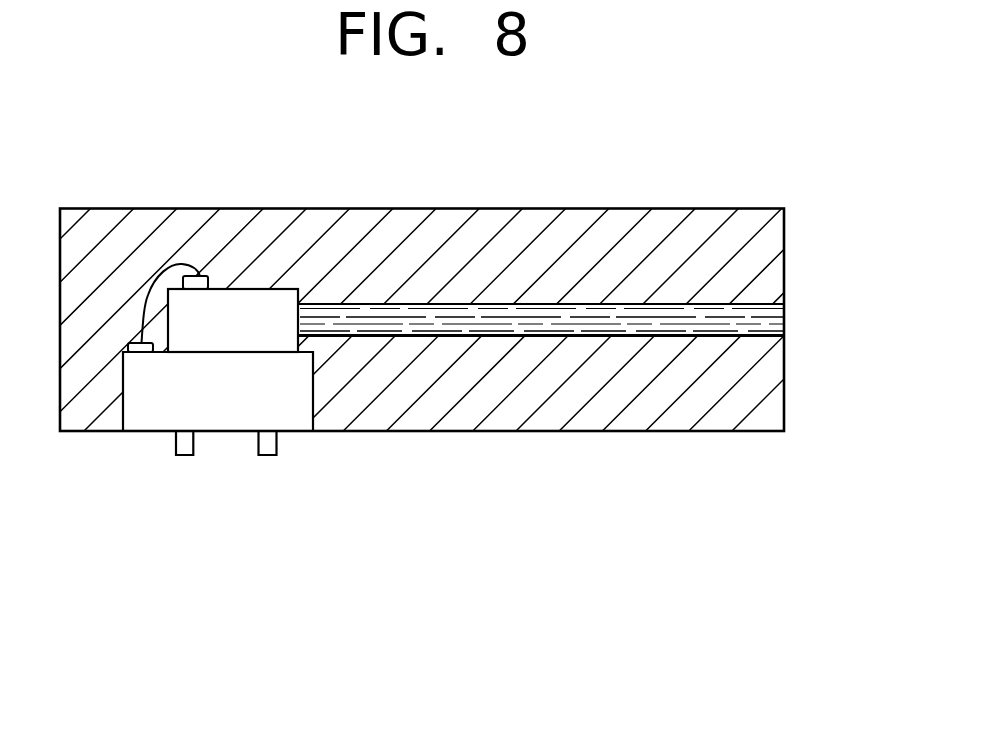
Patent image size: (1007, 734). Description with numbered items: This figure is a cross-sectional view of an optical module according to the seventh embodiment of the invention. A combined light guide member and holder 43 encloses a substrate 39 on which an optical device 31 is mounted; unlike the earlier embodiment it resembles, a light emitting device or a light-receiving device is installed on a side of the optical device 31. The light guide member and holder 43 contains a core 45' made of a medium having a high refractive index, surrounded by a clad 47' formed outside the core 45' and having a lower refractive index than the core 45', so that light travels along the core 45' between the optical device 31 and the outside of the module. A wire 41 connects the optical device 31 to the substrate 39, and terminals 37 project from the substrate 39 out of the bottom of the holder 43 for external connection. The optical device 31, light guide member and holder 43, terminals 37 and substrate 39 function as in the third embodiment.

The light guide member and holder 43 is at (672, 194).
The clad 47' is at (477, 319).
The core 45' is at (580, 323).
The substrate 39 is at (144, 422).
The optical device 31 is at (240, 303).
The bonding wire 41 is at (146, 296).
The terminals 37 is at (260, 451).